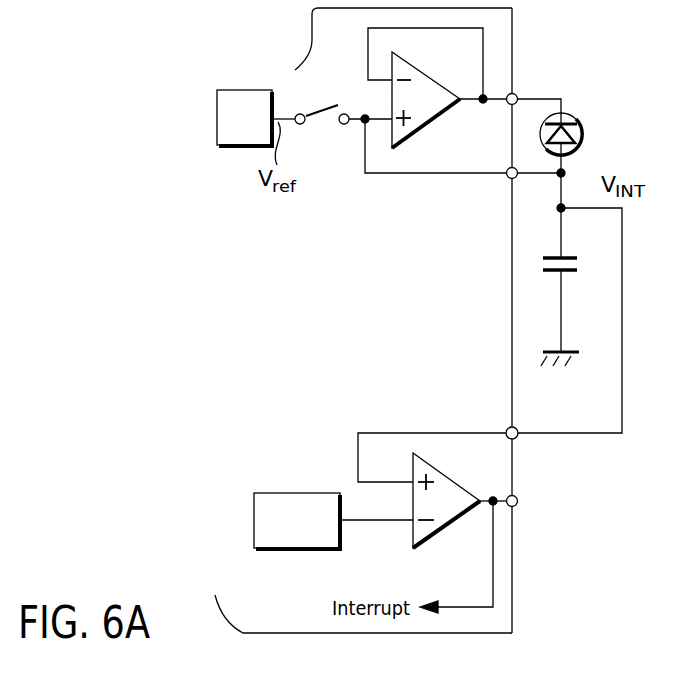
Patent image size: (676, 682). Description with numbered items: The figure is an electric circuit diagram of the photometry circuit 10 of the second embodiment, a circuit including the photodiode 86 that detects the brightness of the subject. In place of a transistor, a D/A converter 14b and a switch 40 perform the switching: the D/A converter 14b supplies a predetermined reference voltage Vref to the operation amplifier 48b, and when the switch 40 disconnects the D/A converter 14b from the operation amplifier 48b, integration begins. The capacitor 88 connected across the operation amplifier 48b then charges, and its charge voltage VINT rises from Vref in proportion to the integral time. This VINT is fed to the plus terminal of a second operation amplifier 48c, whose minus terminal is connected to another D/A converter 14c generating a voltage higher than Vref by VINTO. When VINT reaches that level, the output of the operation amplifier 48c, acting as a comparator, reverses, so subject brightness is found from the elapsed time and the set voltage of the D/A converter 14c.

The light detection circuit / integrated circuit 10 is at (513, 33).
The D/A converter 14b is at (249, 88).
The D/A converter 14c is at (296, 549).
The switch 40 is at (328, 143).
The operation amplifier 48b is at (443, 115).
The operation amplifier 48c is at (440, 535).
The photodiode 86 is at (584, 130).
The capacitor 88 is at (565, 276).